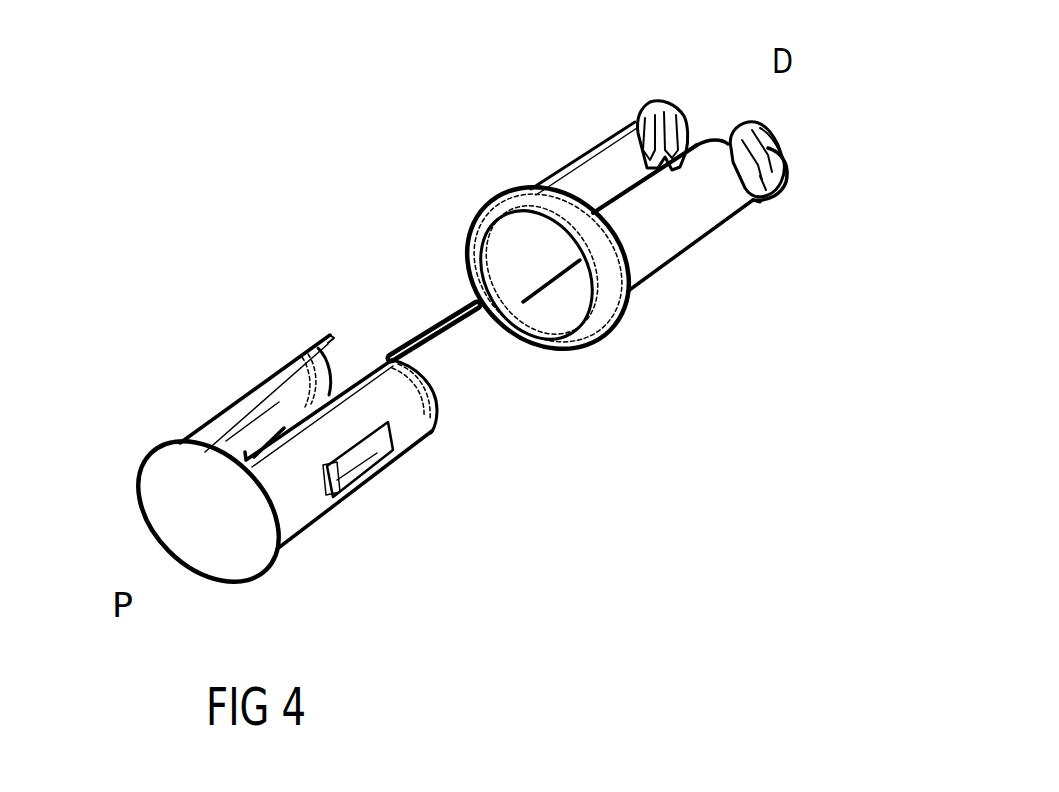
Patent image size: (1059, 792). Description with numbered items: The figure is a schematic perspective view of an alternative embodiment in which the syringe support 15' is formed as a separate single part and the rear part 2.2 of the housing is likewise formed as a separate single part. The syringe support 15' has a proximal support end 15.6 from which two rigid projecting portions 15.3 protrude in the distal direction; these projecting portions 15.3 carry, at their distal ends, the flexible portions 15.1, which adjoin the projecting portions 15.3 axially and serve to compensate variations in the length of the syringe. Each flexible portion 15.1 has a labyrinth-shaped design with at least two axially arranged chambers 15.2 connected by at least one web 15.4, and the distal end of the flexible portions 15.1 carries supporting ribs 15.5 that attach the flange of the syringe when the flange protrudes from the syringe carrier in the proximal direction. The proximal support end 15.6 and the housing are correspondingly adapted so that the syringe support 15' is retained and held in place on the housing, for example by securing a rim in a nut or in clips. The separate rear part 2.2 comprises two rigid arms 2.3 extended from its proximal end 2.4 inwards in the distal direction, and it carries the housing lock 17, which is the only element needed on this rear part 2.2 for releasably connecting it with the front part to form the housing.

The rear part 2.2 is at (180, 410).
The rigid arms 2.3 is at (291, 379).
The proximal end 2.4 is at (180, 527).
The housing lock 17 is at (258, 425).
The syringe support 15' is at (812, 116).
The flexible portions 15.1 is at (655, 97).
The chambers 15.2 is at (633, 127).
The projecting portions 15.3 is at (643, 259).
The web 15.4 is at (760, 181).
The supporting ribs 15.5 is at (780, 157).
The proximal support end 15.6 is at (530, 192).